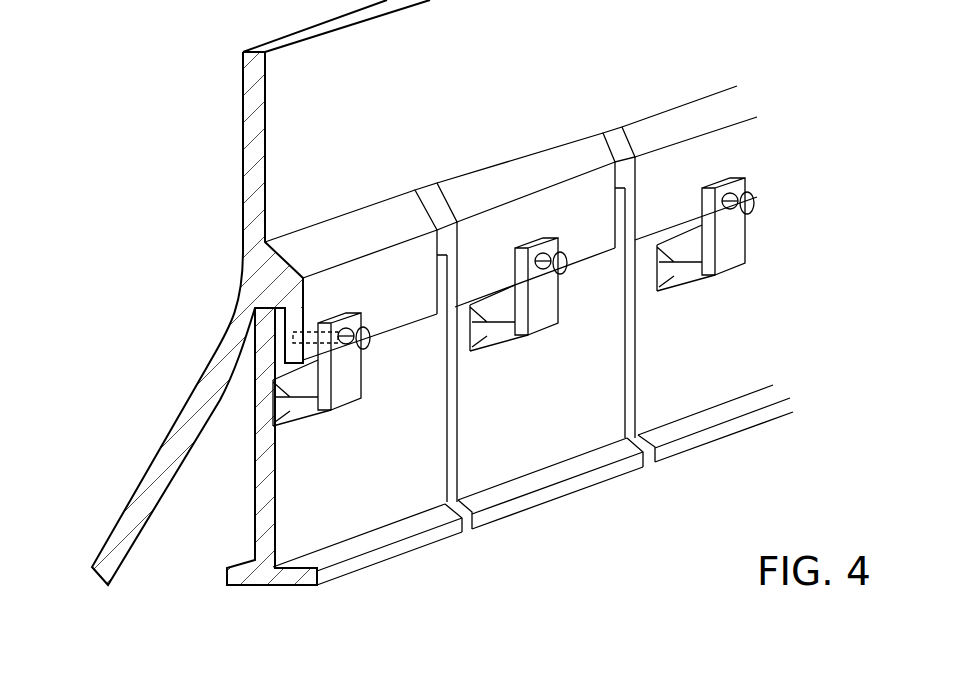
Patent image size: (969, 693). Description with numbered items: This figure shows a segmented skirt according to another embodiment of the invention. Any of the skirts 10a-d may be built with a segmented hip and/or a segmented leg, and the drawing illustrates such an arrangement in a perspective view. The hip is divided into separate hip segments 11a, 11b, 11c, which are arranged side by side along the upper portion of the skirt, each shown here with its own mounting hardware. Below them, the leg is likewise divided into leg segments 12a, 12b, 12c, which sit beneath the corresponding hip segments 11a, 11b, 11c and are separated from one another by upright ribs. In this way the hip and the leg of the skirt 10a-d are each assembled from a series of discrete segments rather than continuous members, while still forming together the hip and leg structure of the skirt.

The skirts 10a-d is at (75, 13).
The hip segment 11a is at (412, 293).
The hip segment 11b is at (595, 223).
The hip segment 11c is at (764, 167).
The leg segment 12a is at (388, 473).
The leg segment 12b is at (572, 403).
The leg segment 12c is at (740, 348).